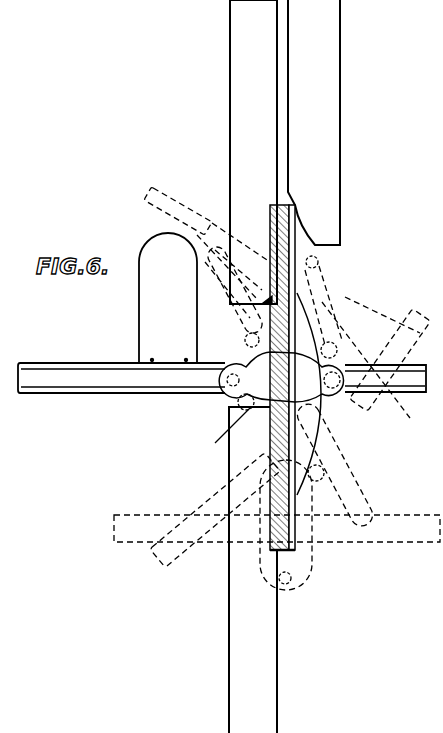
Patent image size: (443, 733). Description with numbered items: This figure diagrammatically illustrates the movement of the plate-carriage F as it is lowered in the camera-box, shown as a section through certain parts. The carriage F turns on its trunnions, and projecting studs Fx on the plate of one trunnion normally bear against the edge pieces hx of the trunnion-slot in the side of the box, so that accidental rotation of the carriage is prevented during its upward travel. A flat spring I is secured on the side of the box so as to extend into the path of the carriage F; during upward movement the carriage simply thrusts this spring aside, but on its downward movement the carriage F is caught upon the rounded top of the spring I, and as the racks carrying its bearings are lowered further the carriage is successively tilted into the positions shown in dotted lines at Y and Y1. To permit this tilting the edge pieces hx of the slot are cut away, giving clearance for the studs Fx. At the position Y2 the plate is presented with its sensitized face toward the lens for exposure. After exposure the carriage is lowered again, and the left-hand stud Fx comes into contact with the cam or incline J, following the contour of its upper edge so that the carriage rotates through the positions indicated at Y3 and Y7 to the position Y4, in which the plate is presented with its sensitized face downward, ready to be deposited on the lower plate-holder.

The edge pieces of the trunnion-slot hx is at (270, 167).
The plate-carriage F is at (270, 207).
The projecting studs Fx is at (345, 408).
The flat spring I is at (168, 298).
The cam or incline J is at (225, 433).
The first tilted position of the carriage Y is at (198, 239).
The second tilted position of the carriage Y1 is at (235, 284).
The exposure position of the carriage Y2 is at (282, 254).
The intermediate rotated position of the carriage Y3 is at (290, 432).
The lever (position Y7) Y7 is at (340, 465).
The final inverted position of the carriage Y4 is at (277, 525).